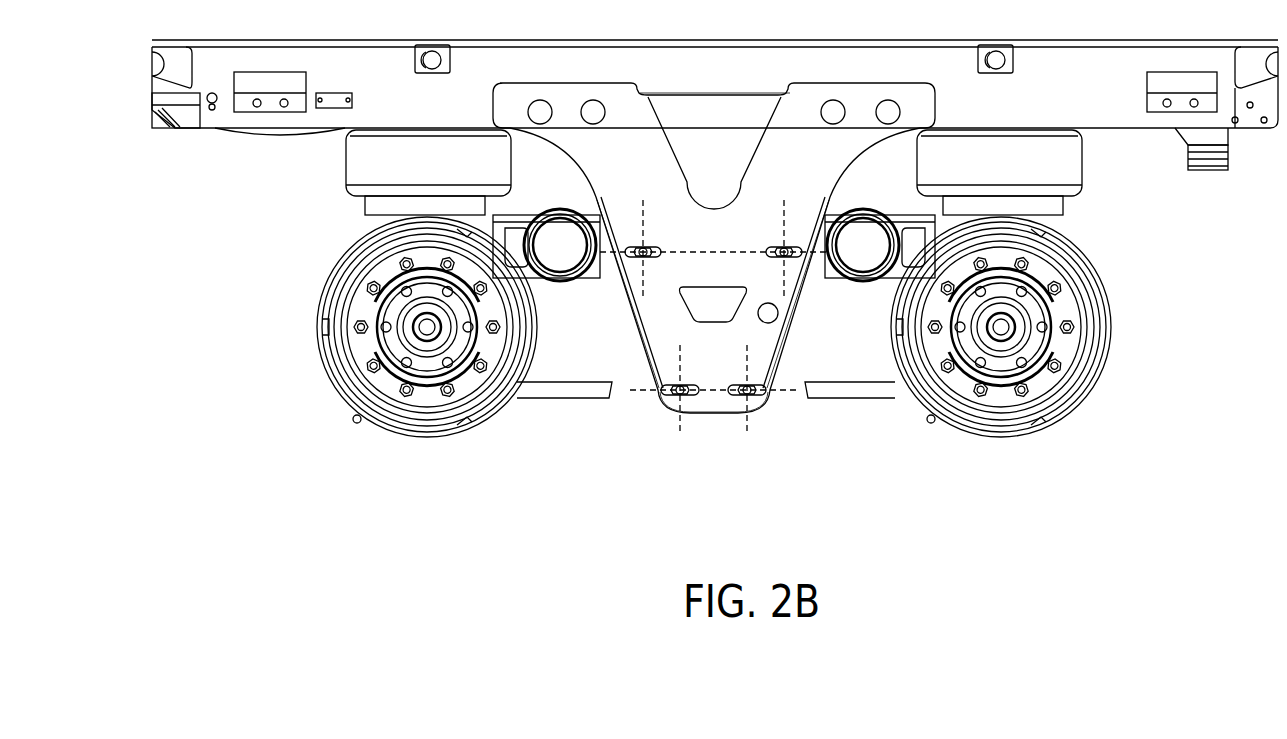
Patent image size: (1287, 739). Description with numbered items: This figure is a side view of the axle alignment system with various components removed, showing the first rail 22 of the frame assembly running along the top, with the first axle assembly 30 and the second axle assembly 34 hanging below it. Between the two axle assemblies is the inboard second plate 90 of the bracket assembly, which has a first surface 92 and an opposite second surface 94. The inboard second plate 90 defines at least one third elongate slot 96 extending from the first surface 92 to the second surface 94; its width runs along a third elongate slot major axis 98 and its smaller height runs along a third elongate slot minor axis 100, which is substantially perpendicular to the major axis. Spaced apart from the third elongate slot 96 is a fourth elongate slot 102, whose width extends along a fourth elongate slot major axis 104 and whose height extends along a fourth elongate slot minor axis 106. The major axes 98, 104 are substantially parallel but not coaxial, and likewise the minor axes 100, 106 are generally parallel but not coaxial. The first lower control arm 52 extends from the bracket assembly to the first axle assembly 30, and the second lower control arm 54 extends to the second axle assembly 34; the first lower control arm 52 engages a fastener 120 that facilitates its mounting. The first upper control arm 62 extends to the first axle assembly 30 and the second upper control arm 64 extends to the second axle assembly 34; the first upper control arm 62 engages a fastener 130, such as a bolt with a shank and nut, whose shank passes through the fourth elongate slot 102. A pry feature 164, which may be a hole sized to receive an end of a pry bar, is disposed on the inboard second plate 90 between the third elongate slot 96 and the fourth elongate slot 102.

The first rail 22 is at (186, 152).
The first axle assembly 30 is at (1003, 458).
The second axle assembly 34 is at (420, 458).
The first lower control arm 52 is at (866, 399).
The second lower control arm 54 is at (592, 399).
The first upper control arm 62 is at (886, 213).
The second upper control arm 64 is at (531, 213).
The inboard second plate 90 is at (710, 238).
The first surface 92 is at (655, 334).
The second surface 94 is at (624, 302).
The third elongate slot 96 is at (742, 404).
The third elongate slot major axis 98 is at (712, 397).
The third elongate slot minor axis 100 is at (683, 437).
The fourth elongate slot 102 is at (794, 238).
The fourth elongate slot major axis 104 is at (658, 260).
The fourth elongate slot minor axis 106 is at (640, 220).
The fastener 120 is at (740, 380).
The fastener 130 is at (780, 248).
The pry feature 164 is at (780, 314).